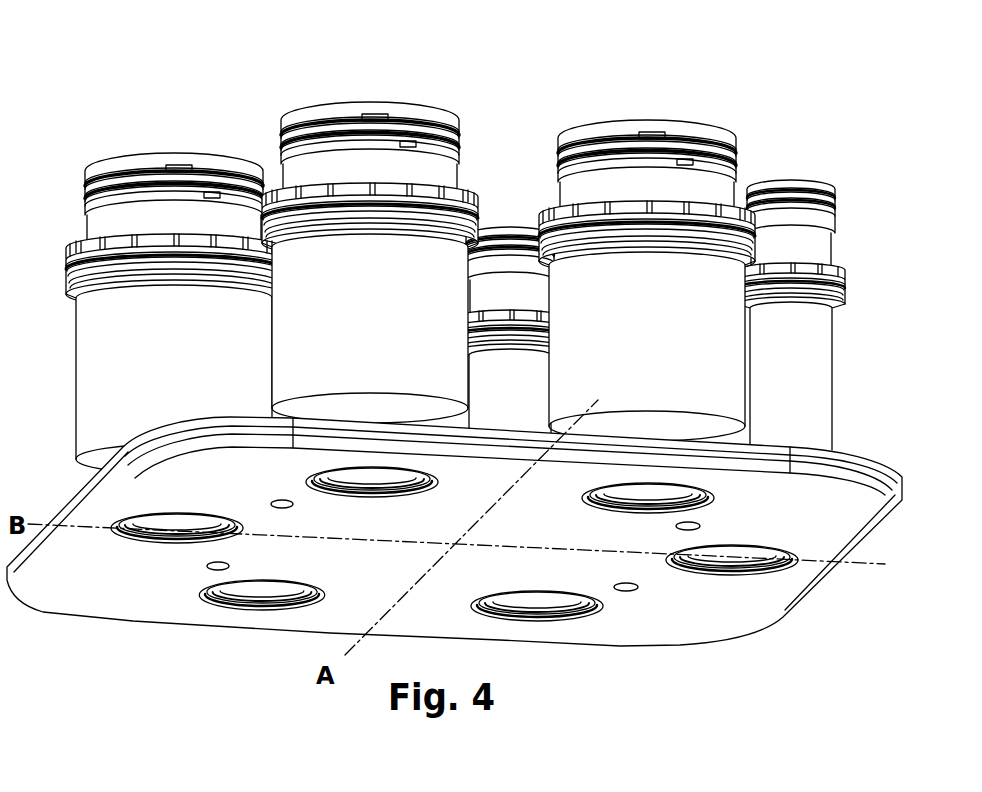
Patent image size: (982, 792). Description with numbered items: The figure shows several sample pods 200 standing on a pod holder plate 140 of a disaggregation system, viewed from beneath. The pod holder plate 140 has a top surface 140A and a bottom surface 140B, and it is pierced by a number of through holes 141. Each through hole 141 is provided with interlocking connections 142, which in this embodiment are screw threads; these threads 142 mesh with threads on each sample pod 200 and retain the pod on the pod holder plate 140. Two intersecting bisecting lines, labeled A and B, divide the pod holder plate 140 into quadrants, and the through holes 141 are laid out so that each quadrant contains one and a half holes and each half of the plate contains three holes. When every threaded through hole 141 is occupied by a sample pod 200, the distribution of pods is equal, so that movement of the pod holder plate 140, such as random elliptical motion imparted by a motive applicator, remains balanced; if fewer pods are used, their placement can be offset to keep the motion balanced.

The sample pod 200 is at (720, 122).
The pod holder plate 140 is at (767, 595).
The top surface 140A is at (847, 450).
The bottom surface 140B is at (653, 613).
The through hole 141 is at (187, 533).
The interlocking connections 142 is at (607, 492).